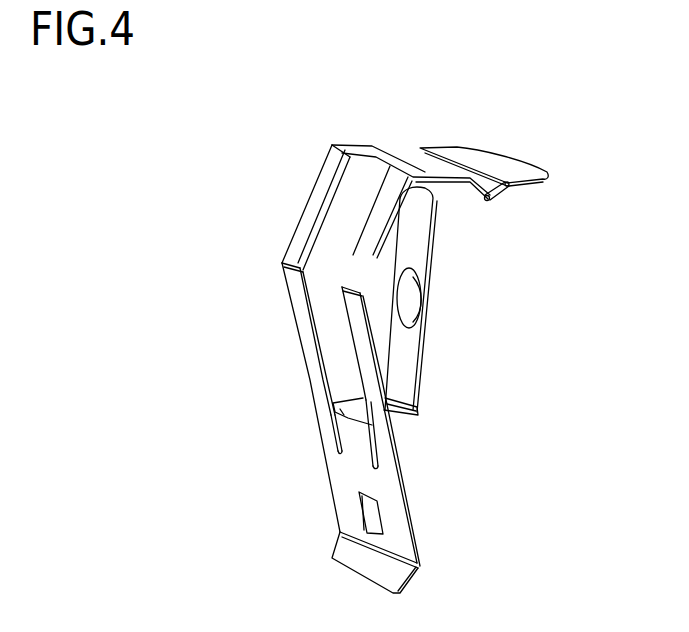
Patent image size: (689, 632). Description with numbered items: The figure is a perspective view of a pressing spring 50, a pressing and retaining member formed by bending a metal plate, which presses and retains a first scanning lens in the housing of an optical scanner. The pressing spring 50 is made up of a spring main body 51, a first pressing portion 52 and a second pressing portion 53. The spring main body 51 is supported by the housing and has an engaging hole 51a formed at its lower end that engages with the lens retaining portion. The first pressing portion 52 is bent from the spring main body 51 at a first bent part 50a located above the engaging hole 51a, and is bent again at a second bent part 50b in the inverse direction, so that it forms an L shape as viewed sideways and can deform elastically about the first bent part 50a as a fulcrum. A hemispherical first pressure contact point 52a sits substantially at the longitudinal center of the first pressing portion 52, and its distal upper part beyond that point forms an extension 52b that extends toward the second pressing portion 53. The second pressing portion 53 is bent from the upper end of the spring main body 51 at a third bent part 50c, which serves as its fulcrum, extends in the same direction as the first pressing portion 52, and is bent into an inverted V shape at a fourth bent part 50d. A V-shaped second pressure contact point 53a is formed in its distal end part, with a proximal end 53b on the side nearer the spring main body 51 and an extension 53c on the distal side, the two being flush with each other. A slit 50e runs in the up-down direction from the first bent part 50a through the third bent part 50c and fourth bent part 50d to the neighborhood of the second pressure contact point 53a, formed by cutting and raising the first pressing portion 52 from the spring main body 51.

The pressing spring 50 is at (208, 204).
The first bent part 50a is at (343, 420).
The second bent part 50b is at (413, 412).
The third bent part 50c is at (280, 262).
The fourth bent part 50d is at (332, 145).
The slit 50e is at (340, 205).
The spring main body 51 is at (312, 399).
The engaging hole 51a is at (380, 522).
The first pressing portion 52 is at (412, 355).
The first pressure contact point 52a is at (410, 310).
The extension 52b is at (420, 227).
The second pressing portion 53 is at (310, 228).
The second pressure contact point 53a is at (489, 203).
The proximal end 53b is at (372, 146).
The extension 53c is at (513, 165).